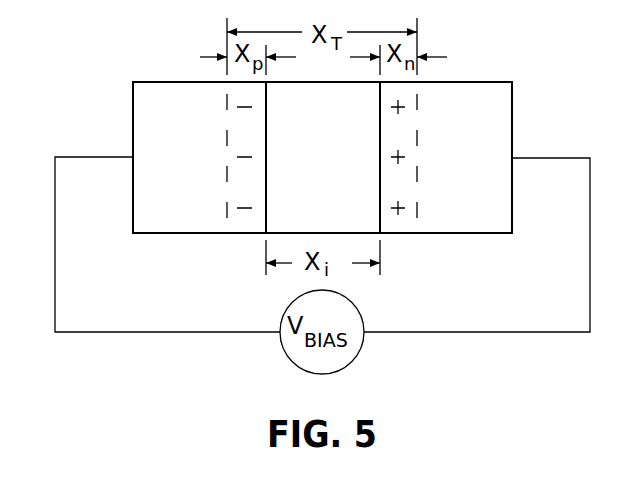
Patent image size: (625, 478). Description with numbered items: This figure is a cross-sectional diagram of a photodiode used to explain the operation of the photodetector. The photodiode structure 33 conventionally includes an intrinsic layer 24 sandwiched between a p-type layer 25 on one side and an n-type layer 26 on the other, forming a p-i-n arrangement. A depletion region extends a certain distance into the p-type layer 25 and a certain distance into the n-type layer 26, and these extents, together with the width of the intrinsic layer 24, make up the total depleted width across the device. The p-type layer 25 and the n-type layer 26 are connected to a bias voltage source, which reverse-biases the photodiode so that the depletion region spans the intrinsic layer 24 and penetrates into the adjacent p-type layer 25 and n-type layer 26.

The p-i-n diode structure 33 is at (155, 82).
The p-type layer 25 is at (182, 200).
The intrinsic layer 24 is at (333, 203).
The n-type layer 26 is at (487, 200).